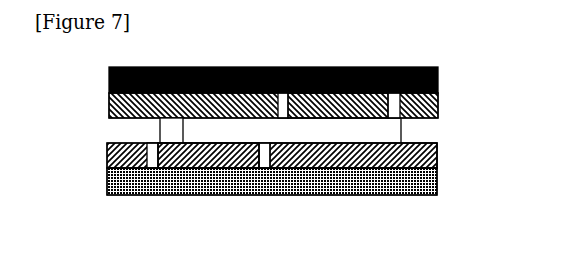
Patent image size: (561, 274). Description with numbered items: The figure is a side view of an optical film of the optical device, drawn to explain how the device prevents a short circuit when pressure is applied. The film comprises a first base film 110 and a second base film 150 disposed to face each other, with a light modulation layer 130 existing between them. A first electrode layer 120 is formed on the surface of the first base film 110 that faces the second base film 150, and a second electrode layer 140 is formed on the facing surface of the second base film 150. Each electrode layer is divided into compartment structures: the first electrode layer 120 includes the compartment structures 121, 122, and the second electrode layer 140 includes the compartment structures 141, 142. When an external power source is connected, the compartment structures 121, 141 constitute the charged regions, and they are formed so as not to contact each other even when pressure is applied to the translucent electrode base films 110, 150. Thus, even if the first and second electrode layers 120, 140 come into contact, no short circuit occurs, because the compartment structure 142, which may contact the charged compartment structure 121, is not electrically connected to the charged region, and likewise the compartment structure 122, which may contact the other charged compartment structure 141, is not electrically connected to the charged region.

The first base film 110 is at (107, 178).
The first electrode layer 120 is at (437, 157).
The compartment structure 121 is at (210, 170).
The compartment structure 122 is at (422, 170).
The light modulation layer 130 is at (159, 125).
The second electrode layer 140 is at (438, 108).
The compartment structure 141 is at (338, 118).
The compartment structure 142 is at (172, 168).
The second base film 150 is at (109, 79).